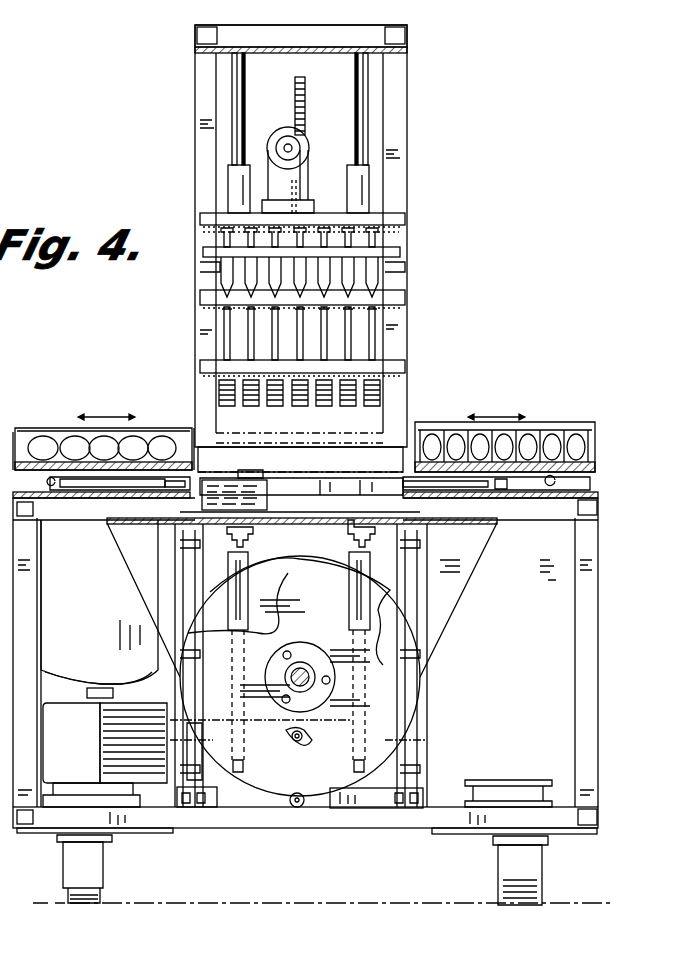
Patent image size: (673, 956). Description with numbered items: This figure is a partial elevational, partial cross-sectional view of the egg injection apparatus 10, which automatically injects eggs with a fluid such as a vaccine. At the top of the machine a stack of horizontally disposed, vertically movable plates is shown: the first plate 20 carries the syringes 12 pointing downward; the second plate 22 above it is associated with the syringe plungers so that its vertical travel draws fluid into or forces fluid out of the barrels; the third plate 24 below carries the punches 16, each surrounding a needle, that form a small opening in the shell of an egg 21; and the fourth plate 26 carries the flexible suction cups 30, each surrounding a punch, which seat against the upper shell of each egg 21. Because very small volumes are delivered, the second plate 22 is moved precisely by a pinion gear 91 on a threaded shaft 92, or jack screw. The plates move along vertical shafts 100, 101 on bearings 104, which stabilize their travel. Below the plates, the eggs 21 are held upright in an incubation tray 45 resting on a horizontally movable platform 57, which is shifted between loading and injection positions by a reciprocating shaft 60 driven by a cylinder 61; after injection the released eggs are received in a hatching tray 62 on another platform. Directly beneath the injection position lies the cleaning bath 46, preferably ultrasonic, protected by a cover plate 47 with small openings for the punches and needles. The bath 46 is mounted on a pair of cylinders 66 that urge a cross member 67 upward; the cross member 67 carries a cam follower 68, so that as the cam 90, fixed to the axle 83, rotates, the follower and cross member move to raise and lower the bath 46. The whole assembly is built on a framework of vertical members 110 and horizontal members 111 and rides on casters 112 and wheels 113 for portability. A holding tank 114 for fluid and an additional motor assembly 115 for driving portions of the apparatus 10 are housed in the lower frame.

The apparatus 10 is at (448, 313).
The syringes 12 is at (210, 287).
The punches 16 is at (228, 339).
The first plate 20 is at (400, 248).
The egg 21 is at (72, 436).
The second plate 22 is at (405, 215).
The third plate 24 is at (405, 294).
The fourth plate 26 is at (400, 359).
The suction cups 30 is at (210, 397).
The incubation tray 45 is at (590, 430).
The cleaning bath 46 is at (380, 411).
The cover plate 47 is at (250, 500).
The movable platform 57 is at (596, 461).
The reciprocating shaft 60 is at (472, 485).
The cylinder 61 is at (100, 487).
The hatching tray 62 is at (43, 430).
The cylinders 66 is at (241, 591).
The cross member 67 is at (419, 701).
The cam follower 68 is at (292, 748).
The axle 83 is at (135, 483).
The cam 90 is at (336, 624).
The pinion gear 91 is at (283, 131).
The threaded shaft 92 is at (295, 96).
The vertical shaft 100 is at (235, 74).
The vertical shaft 101 is at (365, 91).
The bearings 104 is at (228, 191).
The vertical members 110 is at (205, 117).
The horizontal members 111 is at (197, 38).
The casters 112 is at (102, 846).
The wheels 113 is at (99, 887).
The holding tank 114 is at (112, 611).
The motor assembly 115 is at (81, 752).